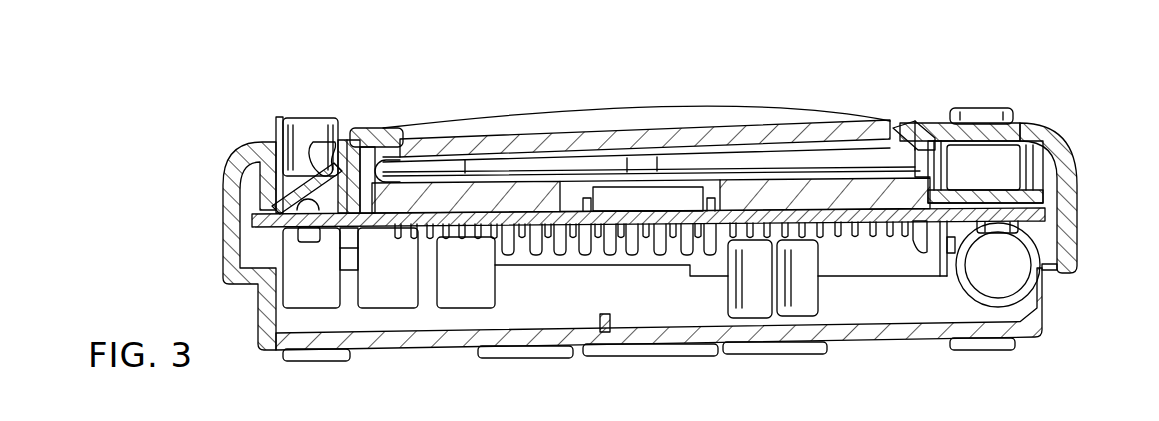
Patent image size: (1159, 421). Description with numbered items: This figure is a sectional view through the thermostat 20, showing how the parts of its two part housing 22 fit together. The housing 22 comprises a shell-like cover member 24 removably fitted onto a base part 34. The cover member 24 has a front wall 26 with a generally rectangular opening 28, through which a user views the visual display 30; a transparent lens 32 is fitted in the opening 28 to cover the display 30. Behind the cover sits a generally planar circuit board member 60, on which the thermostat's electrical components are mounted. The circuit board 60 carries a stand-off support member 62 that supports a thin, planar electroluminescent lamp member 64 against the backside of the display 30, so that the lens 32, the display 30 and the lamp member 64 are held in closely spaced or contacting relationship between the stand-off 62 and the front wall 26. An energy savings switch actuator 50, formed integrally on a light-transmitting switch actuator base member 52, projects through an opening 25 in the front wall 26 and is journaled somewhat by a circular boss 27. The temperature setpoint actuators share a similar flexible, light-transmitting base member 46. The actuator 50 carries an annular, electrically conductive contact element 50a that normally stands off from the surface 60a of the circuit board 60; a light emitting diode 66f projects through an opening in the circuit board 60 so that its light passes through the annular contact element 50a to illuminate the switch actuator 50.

The thermostat 20 is at (770, 98).
The housing 22 is at (1077, 183).
The cover member 24 is at (1057, 143).
The opening 25 is at (293, 118).
The front wall 26 is at (373, 132).
The circular boss 27 is at (230, 175).
The opening 28 is at (893, 130).
The visual display 30 is at (582, 172).
The transparent lens 32 is at (518, 152).
The base part 34 is at (894, 343).
The switch actuator base member 46 is at (1007, 187).
The energy savings switch actuator 50 is at (313, 117).
The contact element 50a is at (280, 230).
The switch actuator base member 52 is at (350, 228).
The circuit board member 60 is at (628, 243).
The surface of circuit board 60a is at (337, 133).
The stand-off support member 62 is at (513, 200).
The electroluminescent lamp member 64 is at (458, 177).
The light emitting diode 66f is at (325, 215).